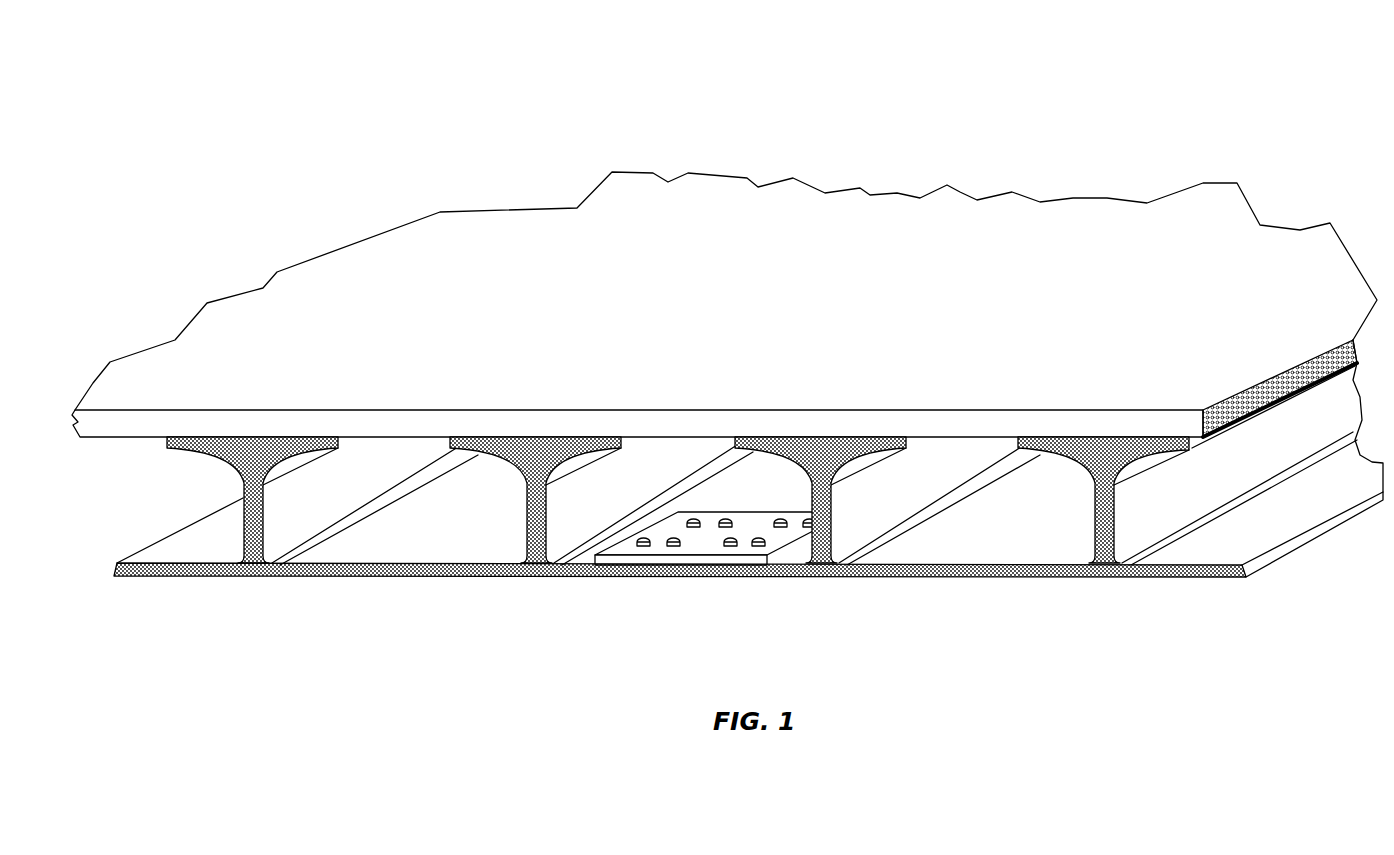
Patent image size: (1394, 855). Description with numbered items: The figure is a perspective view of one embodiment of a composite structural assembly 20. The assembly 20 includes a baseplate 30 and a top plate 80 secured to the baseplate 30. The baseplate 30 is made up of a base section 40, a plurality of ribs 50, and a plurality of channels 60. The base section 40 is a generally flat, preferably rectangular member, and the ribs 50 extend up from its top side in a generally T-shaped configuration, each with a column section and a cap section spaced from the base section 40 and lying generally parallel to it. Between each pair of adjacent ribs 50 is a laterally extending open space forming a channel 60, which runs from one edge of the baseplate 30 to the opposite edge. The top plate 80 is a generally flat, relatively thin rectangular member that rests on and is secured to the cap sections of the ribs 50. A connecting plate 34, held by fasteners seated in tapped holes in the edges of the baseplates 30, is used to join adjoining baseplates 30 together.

The composite structural assembly 20 is at (727, 333).
The baseplate 30 is at (1098, 522).
The connecting plate 34 is at (713, 533).
The base section 40 is at (953, 577).
The rib 50 is at (522, 452).
The channel 60 is at (383, 474).
The top plate 80 is at (1015, 212).